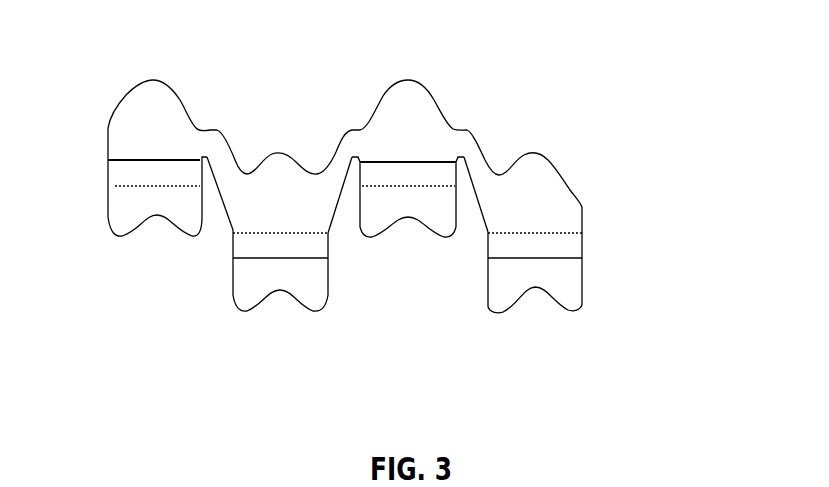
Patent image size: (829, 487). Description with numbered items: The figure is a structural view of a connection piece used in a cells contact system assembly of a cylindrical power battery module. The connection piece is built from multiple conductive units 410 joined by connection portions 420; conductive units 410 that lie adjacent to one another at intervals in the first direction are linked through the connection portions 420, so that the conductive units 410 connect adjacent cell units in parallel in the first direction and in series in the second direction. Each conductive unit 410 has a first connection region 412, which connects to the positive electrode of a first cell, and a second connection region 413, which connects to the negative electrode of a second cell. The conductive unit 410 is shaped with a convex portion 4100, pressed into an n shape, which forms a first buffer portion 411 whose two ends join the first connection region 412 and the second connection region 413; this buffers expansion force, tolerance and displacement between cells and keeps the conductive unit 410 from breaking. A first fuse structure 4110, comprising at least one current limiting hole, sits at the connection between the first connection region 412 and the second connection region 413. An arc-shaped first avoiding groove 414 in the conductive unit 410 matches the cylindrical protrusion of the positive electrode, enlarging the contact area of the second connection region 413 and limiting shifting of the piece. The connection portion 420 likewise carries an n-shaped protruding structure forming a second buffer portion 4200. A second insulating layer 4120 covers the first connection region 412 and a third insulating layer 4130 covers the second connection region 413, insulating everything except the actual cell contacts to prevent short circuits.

The conductive unit 410 is at (411, 209).
The convex portion 4100 is at (229, 254).
The connection portion 420 is at (370, 129).
The second buffer portion 4200 is at (370, 129).
The first connection region 412 is at (434, 182).
The second insulating layer 4120 is at (434, 182).
The first buffer portion 411 is at (422, 309).
The first fuse structure 4110 is at (422, 309).
The second connection region 413 is at (513, 349).
The third insulating layer 4130 is at (513, 349).
The first avoiding groove 414 is at (535, 349).